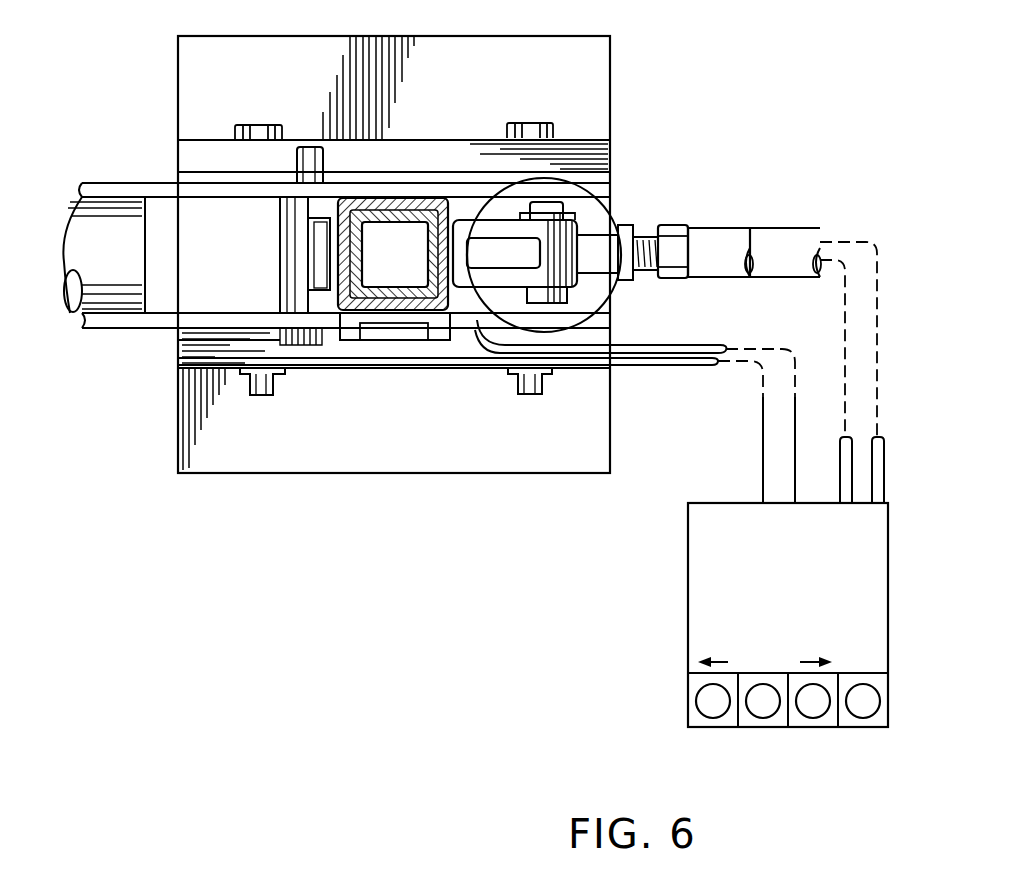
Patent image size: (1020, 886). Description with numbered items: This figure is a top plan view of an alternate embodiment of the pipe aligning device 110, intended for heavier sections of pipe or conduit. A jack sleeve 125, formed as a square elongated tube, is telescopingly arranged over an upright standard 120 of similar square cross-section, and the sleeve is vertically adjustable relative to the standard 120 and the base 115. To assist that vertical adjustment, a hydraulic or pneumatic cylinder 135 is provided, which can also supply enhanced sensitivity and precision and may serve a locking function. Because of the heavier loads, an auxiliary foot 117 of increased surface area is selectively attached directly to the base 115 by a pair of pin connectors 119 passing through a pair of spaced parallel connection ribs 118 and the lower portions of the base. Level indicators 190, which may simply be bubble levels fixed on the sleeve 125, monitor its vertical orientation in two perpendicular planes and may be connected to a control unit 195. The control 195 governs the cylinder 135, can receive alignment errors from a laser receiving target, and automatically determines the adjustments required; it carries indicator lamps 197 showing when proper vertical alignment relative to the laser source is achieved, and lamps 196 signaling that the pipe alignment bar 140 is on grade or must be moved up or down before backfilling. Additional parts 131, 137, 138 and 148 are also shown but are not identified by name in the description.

The pipe aligning device 110 is at (172, 392).
The base 115 is at (222, 216).
The auxiliary foot 117 is at (310, 470).
The connection ribs 118 is at (612, 155).
The pin connectors 119 is at (260, 398).
The upright standard 120 is at (418, 230).
The jack sleeve 125 is at (455, 215).
The pivot pin 131 is at (584, 274).
The hydraulic or pneumatic cylinder 135 is at (592, 212).
The cable coupling 137 is at (735, 233).
The cable 138 is at (778, 237).
The pipe alignment bar 140 is at (108, 277).
The guide bar 148 is at (150, 183).
The level indicators 190 is at (318, 268).
The control unit 195 is at (693, 598).
The lamps 196 is at (813, 708).
The indicator lamps 197 is at (863, 708).